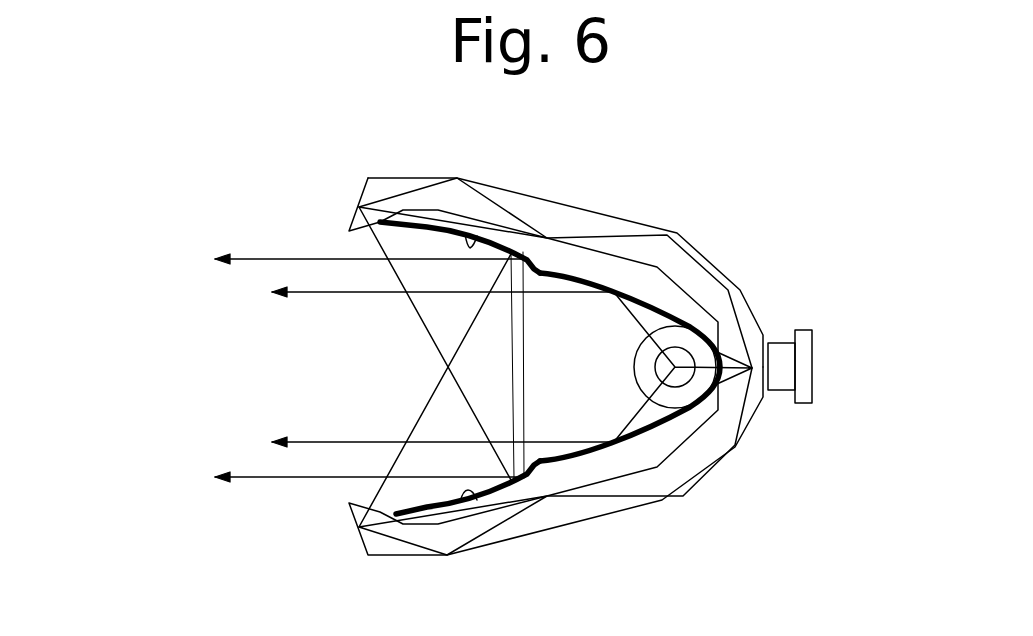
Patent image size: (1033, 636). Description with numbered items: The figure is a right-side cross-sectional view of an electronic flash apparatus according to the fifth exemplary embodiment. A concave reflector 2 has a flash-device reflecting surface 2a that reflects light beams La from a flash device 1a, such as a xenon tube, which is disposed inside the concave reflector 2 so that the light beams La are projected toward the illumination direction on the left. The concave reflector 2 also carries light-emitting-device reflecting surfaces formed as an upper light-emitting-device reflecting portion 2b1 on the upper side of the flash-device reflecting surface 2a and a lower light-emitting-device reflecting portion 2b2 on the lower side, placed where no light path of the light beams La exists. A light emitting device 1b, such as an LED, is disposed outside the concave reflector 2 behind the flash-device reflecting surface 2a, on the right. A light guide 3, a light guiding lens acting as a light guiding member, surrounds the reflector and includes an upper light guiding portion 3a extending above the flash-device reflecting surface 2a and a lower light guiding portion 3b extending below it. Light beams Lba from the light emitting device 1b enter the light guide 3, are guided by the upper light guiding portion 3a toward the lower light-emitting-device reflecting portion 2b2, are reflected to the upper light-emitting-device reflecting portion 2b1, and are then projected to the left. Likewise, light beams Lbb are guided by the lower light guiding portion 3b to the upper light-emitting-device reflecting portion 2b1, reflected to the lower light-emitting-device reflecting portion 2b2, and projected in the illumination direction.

The flash device 1a is at (675, 367).
The light emitting device 1b is at (752, 368).
The concave reflector 2 is at (550, 369).
The flash-device reflecting surface 2a is at (583, 280).
The upper light-emitting-device reflecting portion 2b1 is at (471, 246).
The lower light-emitting-device reflecting portion 2b2 is at (469, 492).
The light guide 3 is at (589, 366).
The upper light guiding portion 3a is at (550, 203).
The lower light guiding portion 3b is at (560, 527).
The light beams La is at (444, 367).
The light beams Lba is at (360, 239).
The light beams Lbb is at (365, 501).